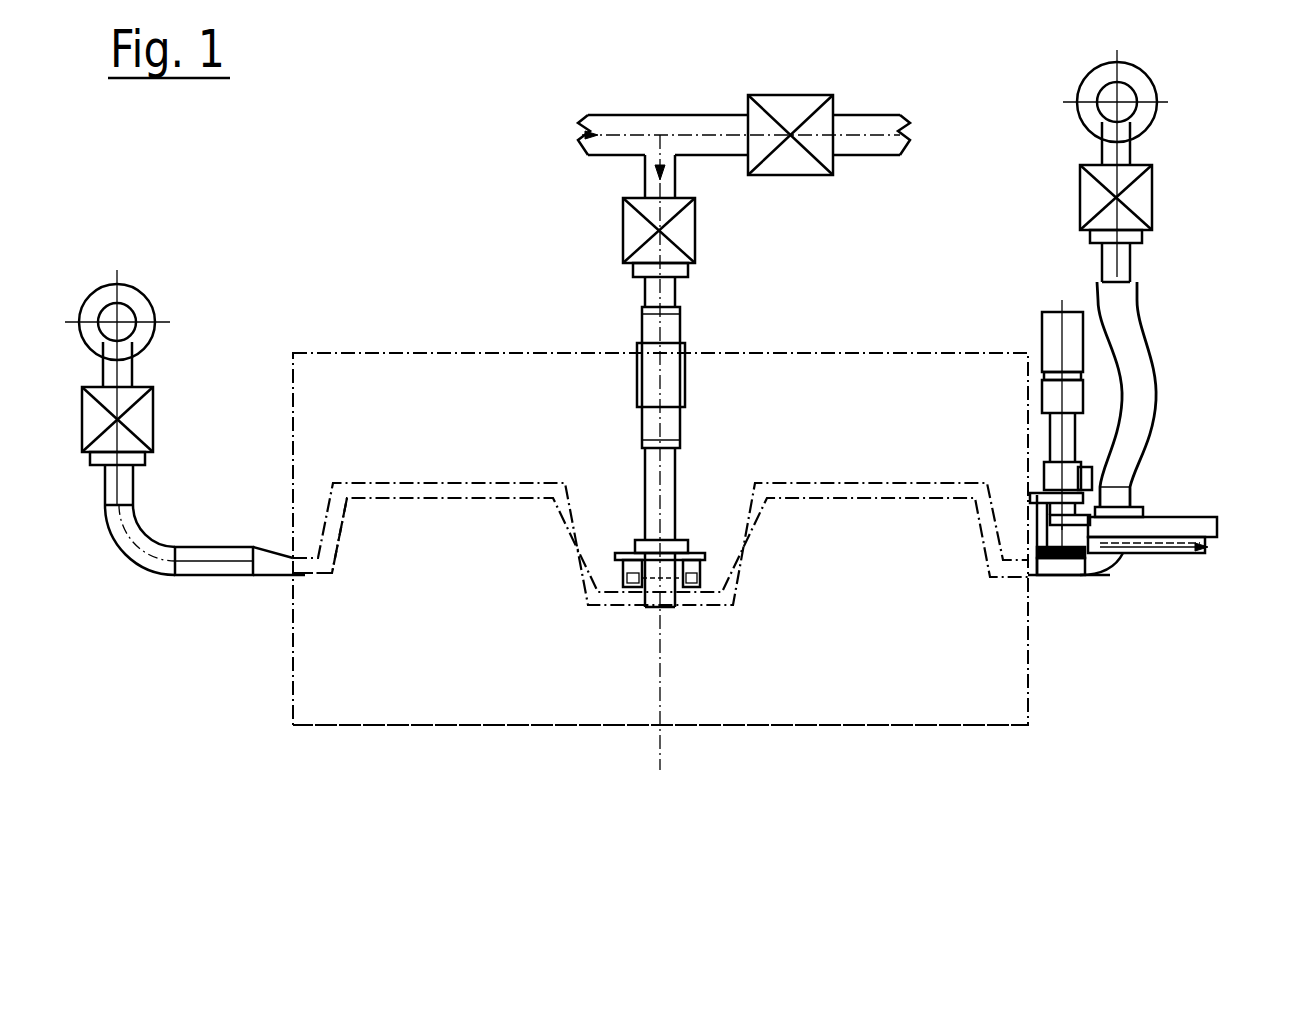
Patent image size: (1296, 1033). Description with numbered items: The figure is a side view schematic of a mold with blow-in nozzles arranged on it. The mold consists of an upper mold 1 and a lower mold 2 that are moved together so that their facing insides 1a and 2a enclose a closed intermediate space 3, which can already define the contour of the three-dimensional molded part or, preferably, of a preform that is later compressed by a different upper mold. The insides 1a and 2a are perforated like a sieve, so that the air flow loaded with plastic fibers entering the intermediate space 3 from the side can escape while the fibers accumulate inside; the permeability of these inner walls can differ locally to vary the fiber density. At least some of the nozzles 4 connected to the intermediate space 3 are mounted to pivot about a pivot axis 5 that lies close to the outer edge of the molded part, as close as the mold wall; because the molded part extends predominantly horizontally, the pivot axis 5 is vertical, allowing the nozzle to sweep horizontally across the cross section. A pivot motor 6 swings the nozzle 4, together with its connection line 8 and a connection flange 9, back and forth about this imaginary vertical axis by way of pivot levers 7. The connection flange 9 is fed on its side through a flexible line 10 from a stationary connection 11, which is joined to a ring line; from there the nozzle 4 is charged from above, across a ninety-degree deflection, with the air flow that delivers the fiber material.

The upper mold 1 is at (365, 402).
The inside of upper mold 1a is at (380, 483).
The lower mold 2 is at (398, 670).
The inside of lower mold 2a is at (418, 500).
The intermediate space 3 is at (477, 490).
The nozzle 4 is at (665, 600).
The pivot axis 5 is at (1038, 440).
The pivot motor 6 is at (1050, 323).
The pivot lever 7 is at (1065, 580).
The connection line 8 is at (1100, 562).
The connection flange 9 is at (1158, 525).
The flexible line 10 is at (1133, 350).
The stationary connection 11 is at (1125, 262).